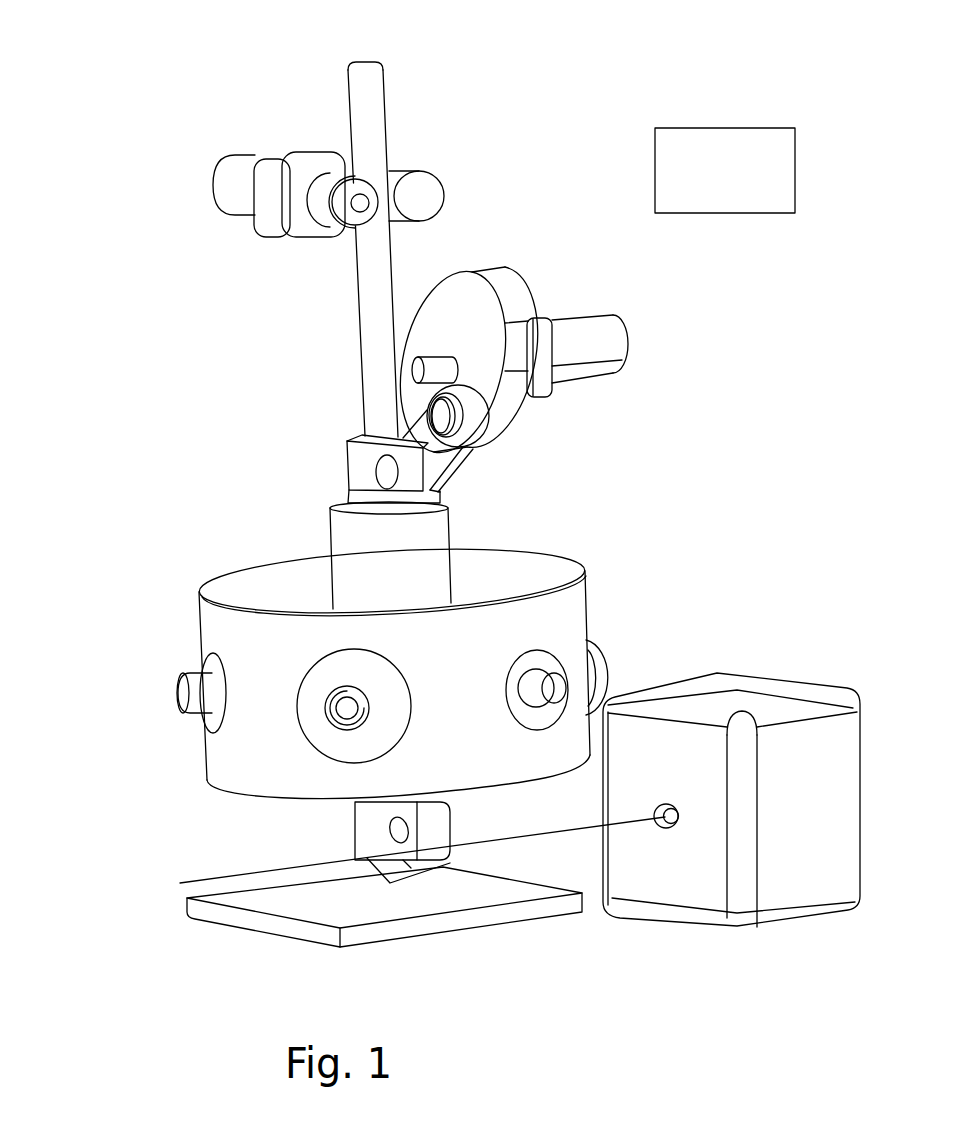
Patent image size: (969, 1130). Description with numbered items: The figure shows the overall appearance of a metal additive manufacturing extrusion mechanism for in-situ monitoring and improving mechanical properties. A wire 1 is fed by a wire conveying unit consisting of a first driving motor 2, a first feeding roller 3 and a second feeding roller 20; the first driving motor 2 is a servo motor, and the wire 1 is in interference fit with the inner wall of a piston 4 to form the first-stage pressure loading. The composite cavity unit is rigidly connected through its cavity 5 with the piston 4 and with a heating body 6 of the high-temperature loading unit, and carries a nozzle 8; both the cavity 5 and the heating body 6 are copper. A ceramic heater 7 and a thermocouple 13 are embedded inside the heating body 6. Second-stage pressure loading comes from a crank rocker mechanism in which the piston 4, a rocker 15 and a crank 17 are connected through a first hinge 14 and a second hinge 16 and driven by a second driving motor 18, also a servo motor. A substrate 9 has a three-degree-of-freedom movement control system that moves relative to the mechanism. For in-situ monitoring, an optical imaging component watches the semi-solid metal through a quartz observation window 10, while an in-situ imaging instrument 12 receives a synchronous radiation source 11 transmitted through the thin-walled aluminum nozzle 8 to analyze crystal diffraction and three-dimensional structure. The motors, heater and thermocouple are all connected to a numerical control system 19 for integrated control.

The wire 1 is at (368, 100).
The first driving motor 2 is at (267, 198).
The first feeding roller 3 is at (323, 203).
The piston 4 is at (350, 485).
The cavity 5 is at (378, 571).
The heating body 6 is at (268, 655).
The ceramic heater 7 is at (340, 709).
The nozzle 8 is at (368, 830).
The substrate 9 is at (323, 913).
The quartz observation window 10 is at (370, 860).
The synchronous radiation source 11 is at (575, 850).
The in-situ imaging instrument 12 is at (683, 737).
The thermocouple 13 is at (530, 695).
The first hinge 14 is at (428, 496).
The rocker 15 is at (432, 450).
The second hinge 16 is at (435, 417).
The crank 17 is at (476, 377).
The second driving motor 18 is at (590, 339).
The numerical control system 19 is at (710, 157).
The second feeding roller 20 is at (420, 200).